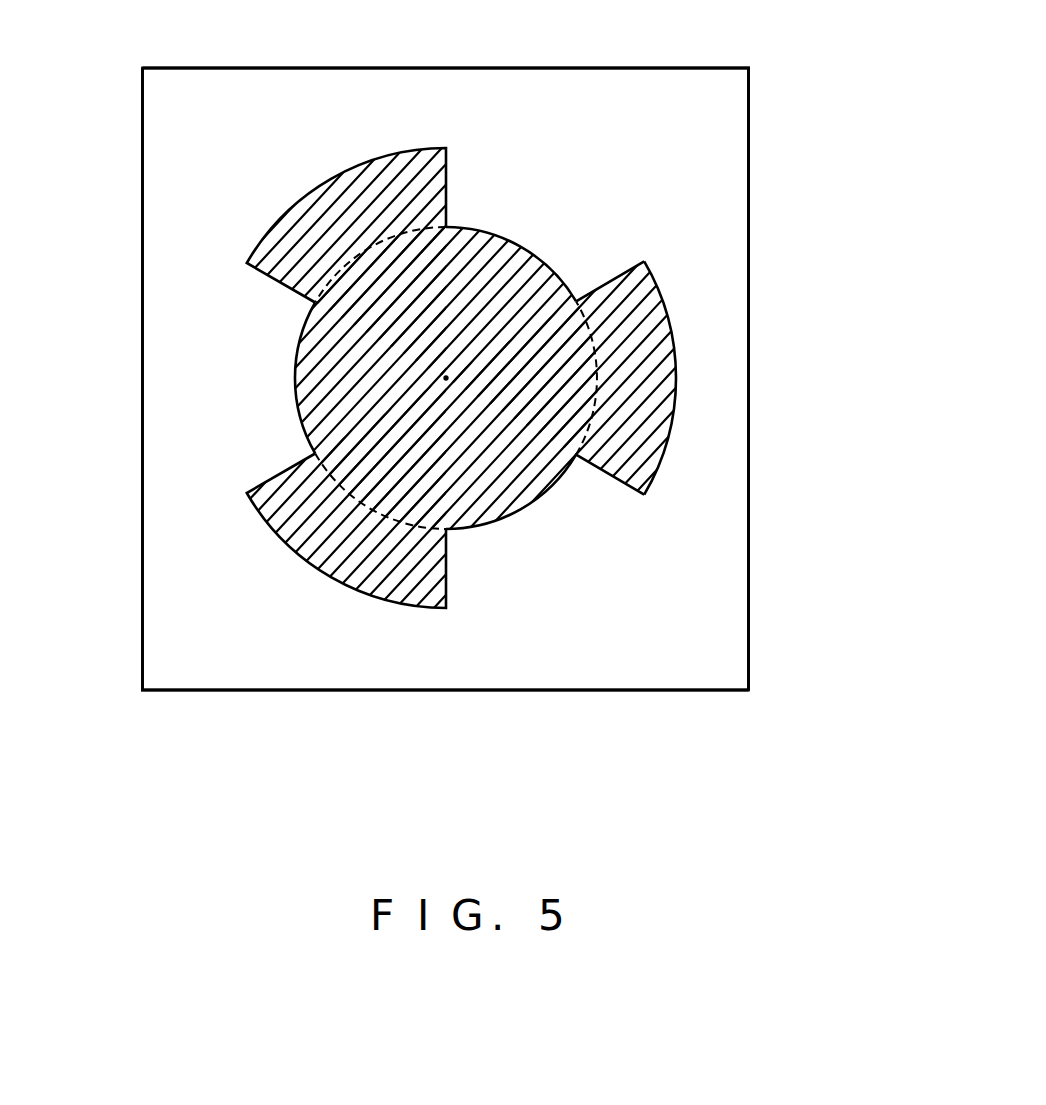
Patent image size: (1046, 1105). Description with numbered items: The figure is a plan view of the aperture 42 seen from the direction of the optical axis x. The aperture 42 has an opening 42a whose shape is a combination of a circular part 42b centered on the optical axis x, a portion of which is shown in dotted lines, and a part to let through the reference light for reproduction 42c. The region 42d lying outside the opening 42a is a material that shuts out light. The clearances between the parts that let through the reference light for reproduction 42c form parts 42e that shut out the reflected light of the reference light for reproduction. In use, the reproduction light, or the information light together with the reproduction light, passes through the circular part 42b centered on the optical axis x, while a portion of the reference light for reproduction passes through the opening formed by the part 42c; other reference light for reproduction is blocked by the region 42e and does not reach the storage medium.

The aperture 42 is at (748, 232).
The opening 42a is at (673, 343).
The circular part centering on the optical axis 42b is at (506, 282).
The part to let through the reference light for reproduction 42c is at (625, 423).
The region other than the opening 42d is at (723, 147).
The part to shut out the reflected light of the reference light for reproduction 42e is at (275, 376).
The optical axis x is at (447, 378).